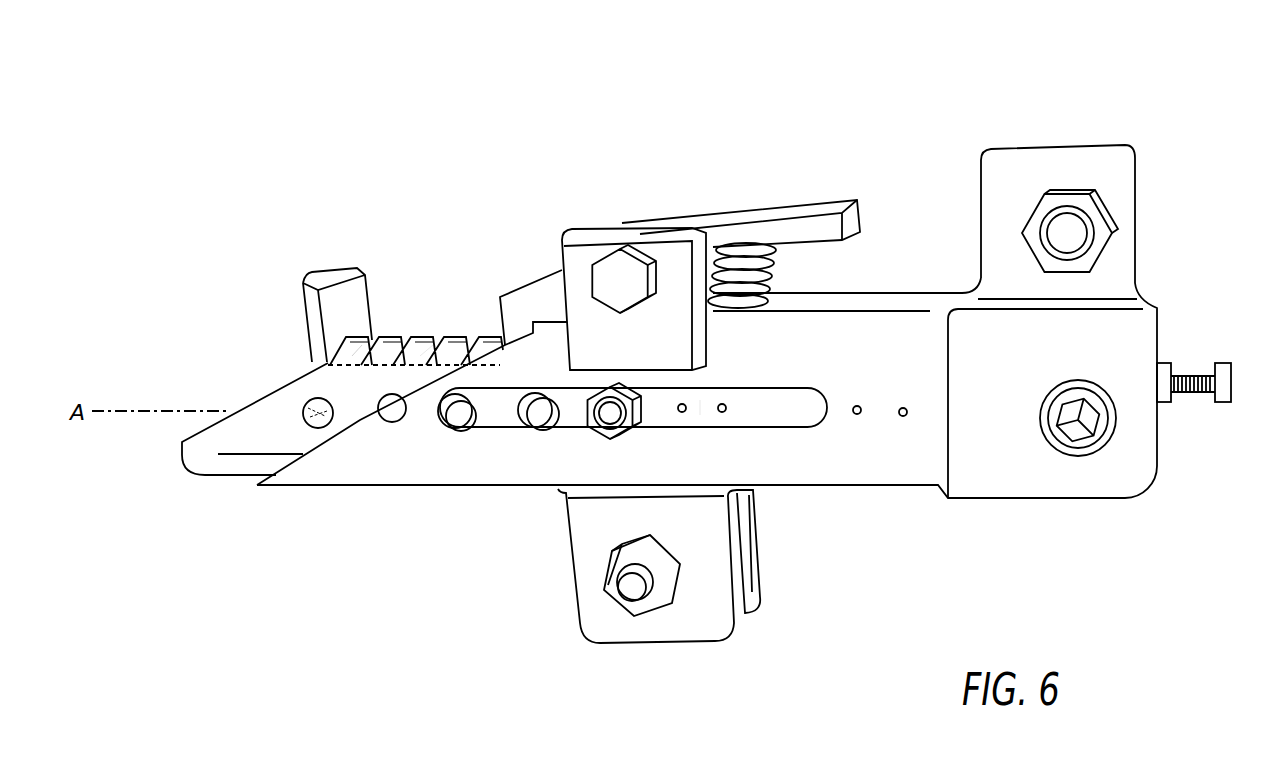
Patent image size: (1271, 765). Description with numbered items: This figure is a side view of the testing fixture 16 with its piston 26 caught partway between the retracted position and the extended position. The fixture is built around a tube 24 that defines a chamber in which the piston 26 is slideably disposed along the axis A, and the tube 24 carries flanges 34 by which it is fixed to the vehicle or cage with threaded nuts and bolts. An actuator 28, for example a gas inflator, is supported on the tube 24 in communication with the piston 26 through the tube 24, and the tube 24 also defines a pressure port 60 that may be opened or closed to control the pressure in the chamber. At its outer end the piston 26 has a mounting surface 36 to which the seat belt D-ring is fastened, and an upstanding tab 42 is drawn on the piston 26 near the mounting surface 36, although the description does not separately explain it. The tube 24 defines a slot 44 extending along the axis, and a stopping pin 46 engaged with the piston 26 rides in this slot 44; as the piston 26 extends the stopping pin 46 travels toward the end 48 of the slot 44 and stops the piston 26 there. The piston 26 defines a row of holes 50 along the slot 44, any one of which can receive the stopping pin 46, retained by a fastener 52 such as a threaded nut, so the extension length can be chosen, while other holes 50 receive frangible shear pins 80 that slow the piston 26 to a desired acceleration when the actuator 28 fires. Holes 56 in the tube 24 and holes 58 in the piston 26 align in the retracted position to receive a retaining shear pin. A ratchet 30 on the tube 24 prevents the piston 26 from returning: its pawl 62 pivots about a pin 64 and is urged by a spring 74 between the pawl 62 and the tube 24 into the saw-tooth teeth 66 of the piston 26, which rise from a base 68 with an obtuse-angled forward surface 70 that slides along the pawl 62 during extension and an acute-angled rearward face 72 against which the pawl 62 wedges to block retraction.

The testing fixture 16 is at (953, 88).
The tube 24 is at (1130, 330).
The piston 26 is at (238, 448).
The actuator 28 is at (1080, 458).
The ratchet 30 is at (799, 176).
The flanges 34 is at (1125, 158).
The mounting surface 36 is at (248, 405).
The tab 42 is at (315, 305).
The slot 44 is at (468, 428).
The stopping pin 46 is at (590, 425).
The end of the slot 48 is at (380, 408).
The holes 50 is at (460, 410).
The fastener 52 is at (620, 436).
The holes 56 is at (903, 408).
The holes 58 is at (725, 404).
The pressure port 60 is at (1165, 362).
The pawl 62 is at (533, 298).
The pin 64 is at (620, 275).
The teeth 66 is at (487, 332).
The base 68 is at (360, 357).
The forward surface 70 is at (372, 350).
The rearward face 72 is at (410, 357).
The spring 74 is at (776, 290).
The shear pin 80 is at (438, 407).